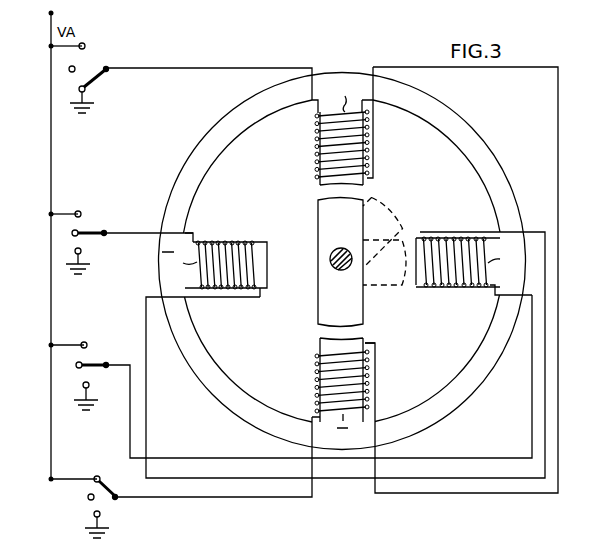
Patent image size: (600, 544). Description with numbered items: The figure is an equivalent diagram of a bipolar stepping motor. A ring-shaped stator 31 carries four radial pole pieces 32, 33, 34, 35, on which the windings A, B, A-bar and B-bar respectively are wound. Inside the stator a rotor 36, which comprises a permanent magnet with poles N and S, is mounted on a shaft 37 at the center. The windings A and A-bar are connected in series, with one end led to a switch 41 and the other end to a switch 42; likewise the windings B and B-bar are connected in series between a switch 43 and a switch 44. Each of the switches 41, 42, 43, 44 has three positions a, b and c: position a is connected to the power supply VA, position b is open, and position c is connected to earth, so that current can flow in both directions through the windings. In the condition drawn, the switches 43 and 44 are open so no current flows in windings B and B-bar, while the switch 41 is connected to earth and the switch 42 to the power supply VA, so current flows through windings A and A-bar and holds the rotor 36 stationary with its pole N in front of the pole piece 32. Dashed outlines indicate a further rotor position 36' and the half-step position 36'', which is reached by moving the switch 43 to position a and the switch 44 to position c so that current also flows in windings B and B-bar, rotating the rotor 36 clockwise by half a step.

The stator 31 is at (490, 162).
The pole piece 32 is at (328, 109).
The pole piece 33 is at (423, 288).
The pole piece 34 is at (362, 342).
The pole piece 35 is at (247, 288).
The rotor 36 is at (322, 260).
The rotor position 36' is at (389, 287).
The rotor half-step position 36'' is at (398, 223).
The shaft 37 is at (335, 270).
The switch 41 is at (102, 80).
The switch 42 is at (108, 500).
The switch 43 is at (93, 238).
The switch 44 is at (95, 372).